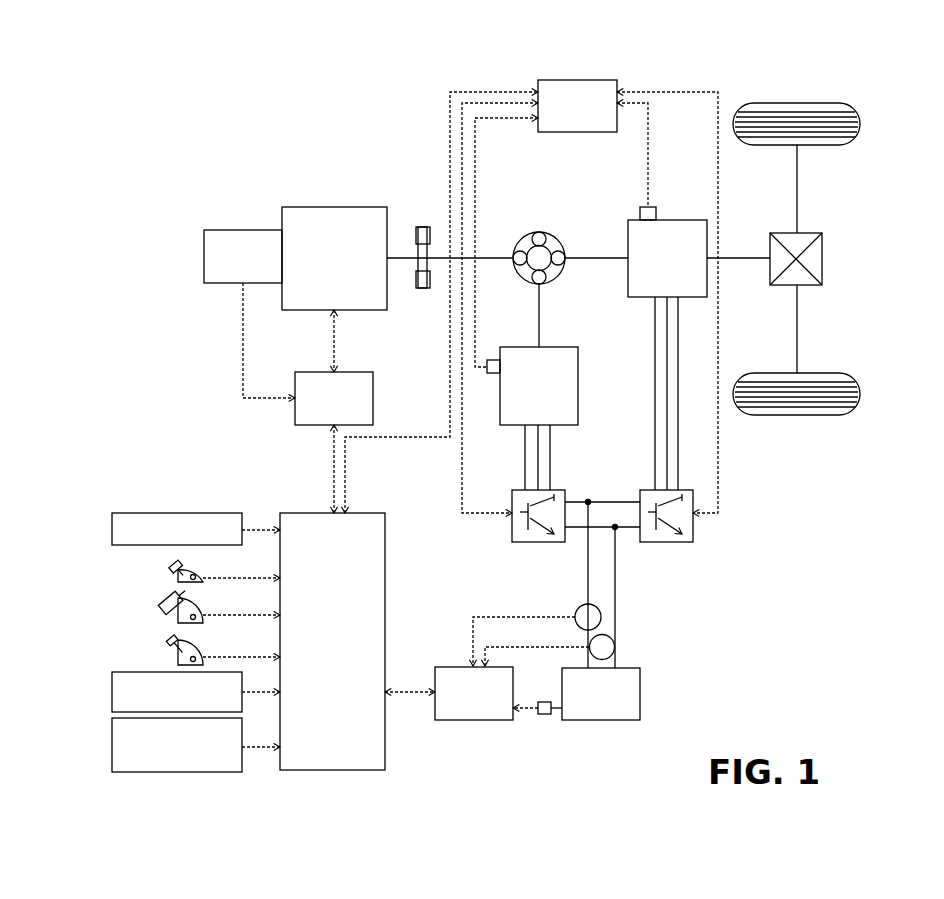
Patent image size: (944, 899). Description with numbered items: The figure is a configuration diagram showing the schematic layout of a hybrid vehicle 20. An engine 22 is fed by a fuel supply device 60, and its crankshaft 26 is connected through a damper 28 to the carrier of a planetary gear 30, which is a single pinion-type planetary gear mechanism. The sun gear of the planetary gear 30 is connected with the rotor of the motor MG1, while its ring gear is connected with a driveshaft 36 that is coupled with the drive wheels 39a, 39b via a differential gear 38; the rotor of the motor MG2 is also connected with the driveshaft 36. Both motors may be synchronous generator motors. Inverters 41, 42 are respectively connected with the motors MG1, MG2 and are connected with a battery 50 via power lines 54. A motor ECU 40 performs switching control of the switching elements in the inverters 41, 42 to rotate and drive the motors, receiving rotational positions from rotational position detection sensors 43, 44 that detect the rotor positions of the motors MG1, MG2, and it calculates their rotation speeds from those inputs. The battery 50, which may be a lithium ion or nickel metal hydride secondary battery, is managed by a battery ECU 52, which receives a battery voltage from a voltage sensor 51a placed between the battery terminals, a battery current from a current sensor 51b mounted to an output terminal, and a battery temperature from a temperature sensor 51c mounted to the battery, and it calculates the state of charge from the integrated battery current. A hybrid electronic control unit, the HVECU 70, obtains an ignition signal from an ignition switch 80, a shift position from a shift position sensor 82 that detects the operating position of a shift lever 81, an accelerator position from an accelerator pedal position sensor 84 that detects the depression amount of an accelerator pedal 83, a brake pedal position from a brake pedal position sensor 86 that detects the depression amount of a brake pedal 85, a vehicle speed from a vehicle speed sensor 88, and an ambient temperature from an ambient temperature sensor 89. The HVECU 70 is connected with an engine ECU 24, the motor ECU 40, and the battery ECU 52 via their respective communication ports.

The hybrid vehicle 20 is at (706, 52).
The engine 22 is at (370, 207).
The engine ECU 24 is at (350, 372).
The crankshaft 26 is at (398, 255).
The damper 28 is at (424, 227).
The planetary gear 30 is at (540, 232).
The driveshaft 36 is at (744, 256).
The differential gear 38 is at (806, 233).
The drive wheel 39a is at (798, 103).
The drive wheel 39b is at (792, 415).
The motor ECU 40 is at (592, 80).
The inverter 41 is at (562, 490).
The inverter 42 is at (688, 490).
The rotational position detection sensor 43 is at (490, 360).
The rotational position detection sensor 44 is at (644, 206).
The battery 50 is at (640, 691).
The voltage sensor 51a is at (615, 647).
The current sensor 51b is at (603, 617).
The temperature sensor 51c is at (544, 716).
The battery ECU 52 is at (454, 666).
The power lines 54 is at (592, 558).
The fuel supply device 60 is at (246, 229).
The HVECU 70 is at (357, 513).
The ignition switch 80 is at (112, 528).
The shift lever 81 is at (173, 569).
The shift position sensor 82 is at (175, 579).
The accelerator pedal 83 is at (165, 602).
The accelerator pedal position sensor 84 is at (178, 619).
The brake pedal 85 is at (170, 645).
The brake pedal position sensor 86 is at (178, 662).
The vehicle speed sensor 88 is at (112, 690).
The ambient temperature sensor 89 is at (112, 745).
The motor MG1 is at (562, 347).
The motor MG2 is at (683, 220).